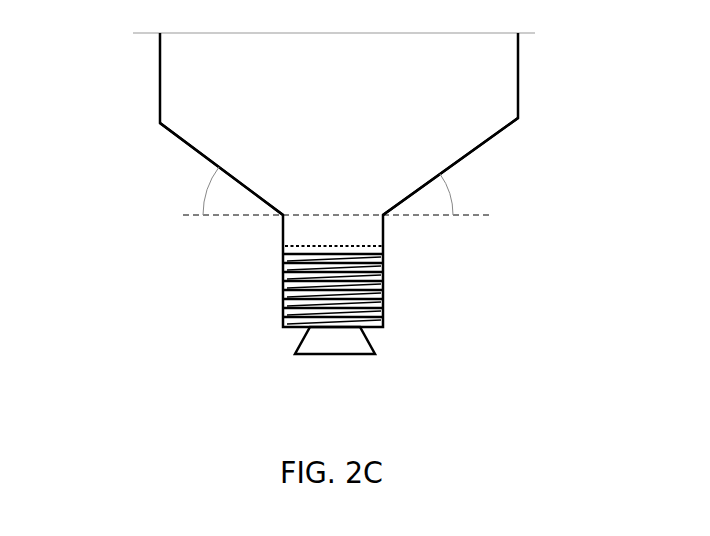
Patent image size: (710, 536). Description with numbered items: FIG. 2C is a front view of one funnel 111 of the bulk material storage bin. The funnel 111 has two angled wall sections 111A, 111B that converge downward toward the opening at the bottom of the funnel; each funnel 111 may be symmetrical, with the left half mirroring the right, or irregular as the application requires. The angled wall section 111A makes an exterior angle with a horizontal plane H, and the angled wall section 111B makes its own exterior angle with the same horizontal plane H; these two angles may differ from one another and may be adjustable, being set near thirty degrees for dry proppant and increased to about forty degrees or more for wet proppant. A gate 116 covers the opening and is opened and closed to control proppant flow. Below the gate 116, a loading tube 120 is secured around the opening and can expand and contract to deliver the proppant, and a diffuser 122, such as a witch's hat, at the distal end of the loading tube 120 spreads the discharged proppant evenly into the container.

The funnel 111 is at (545, 238).
The angled wall section 111A is at (187, 147).
The angled wall section 111B is at (485, 145).
The gate 116 is at (384, 247).
The loading tube 120 is at (283, 296).
The diffuser 122 is at (313, 354).
The horizontal plane H is at (242, 217).